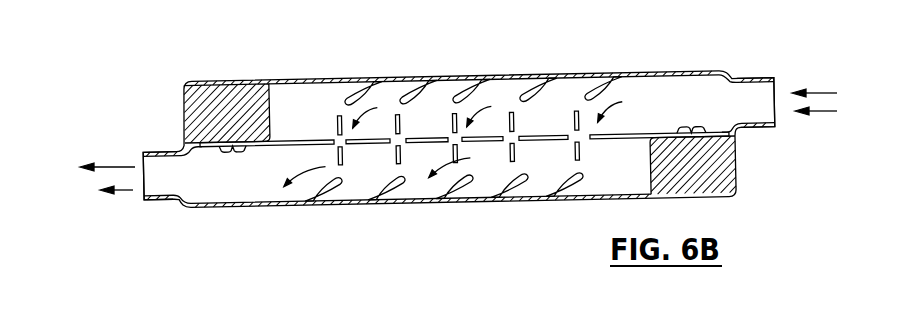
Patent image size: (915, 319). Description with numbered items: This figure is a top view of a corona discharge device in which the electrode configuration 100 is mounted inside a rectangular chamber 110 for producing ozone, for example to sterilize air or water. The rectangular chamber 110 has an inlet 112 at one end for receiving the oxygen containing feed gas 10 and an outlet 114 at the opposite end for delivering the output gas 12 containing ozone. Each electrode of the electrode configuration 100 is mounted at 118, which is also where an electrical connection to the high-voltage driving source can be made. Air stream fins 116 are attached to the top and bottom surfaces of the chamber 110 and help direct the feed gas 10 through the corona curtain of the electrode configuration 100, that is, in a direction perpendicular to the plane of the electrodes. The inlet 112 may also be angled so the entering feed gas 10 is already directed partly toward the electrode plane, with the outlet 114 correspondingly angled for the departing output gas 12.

The electrode configuration 100 is at (546, 150).
The rectangular chamber 110 is at (254, 82).
The inlet 112 is at (760, 79).
The outlet 114 is at (166, 200).
The air stream fins 116 is at (345, 80).
The electrode mounting 118 is at (213, 140).
The feed gas 10 is at (810, 109).
The output gas 12 is at (99, 164).